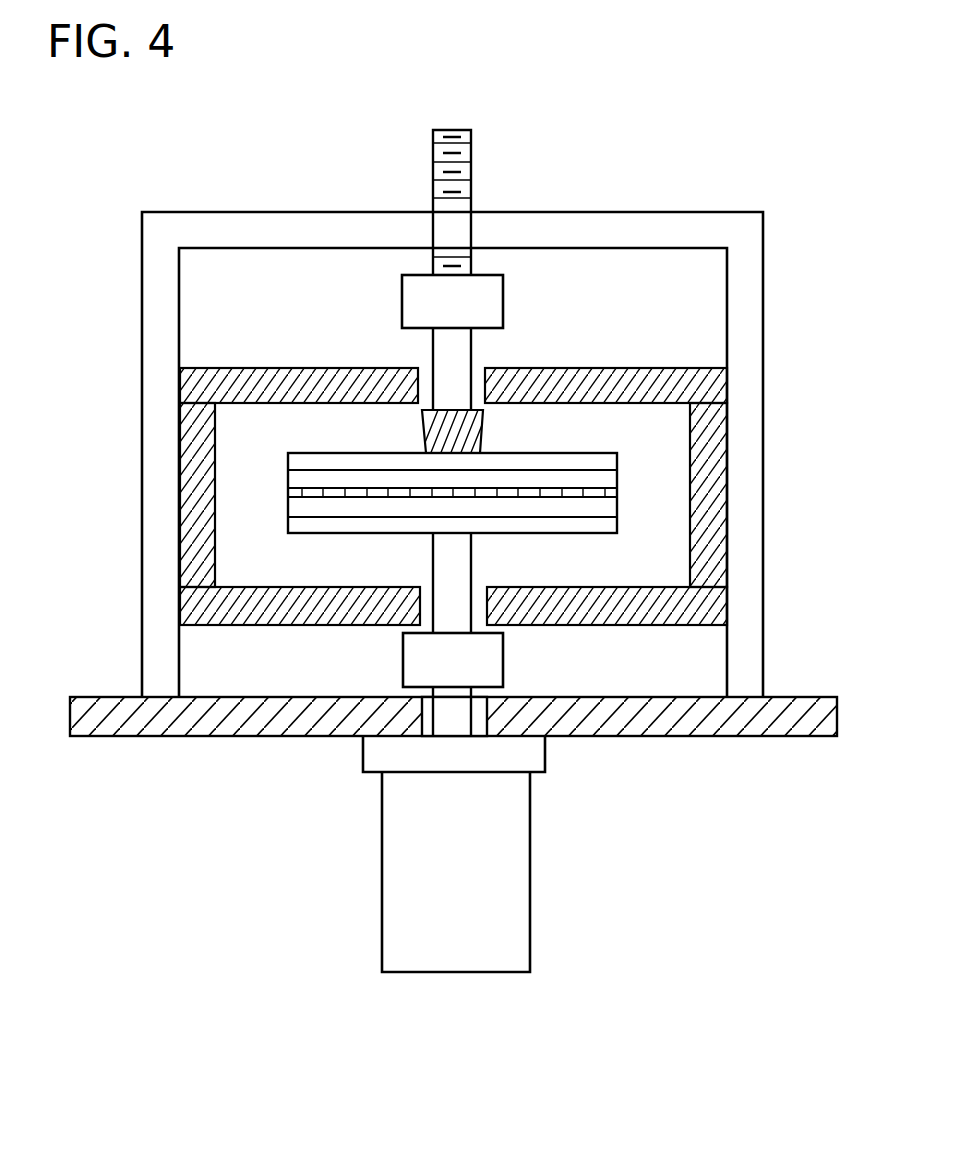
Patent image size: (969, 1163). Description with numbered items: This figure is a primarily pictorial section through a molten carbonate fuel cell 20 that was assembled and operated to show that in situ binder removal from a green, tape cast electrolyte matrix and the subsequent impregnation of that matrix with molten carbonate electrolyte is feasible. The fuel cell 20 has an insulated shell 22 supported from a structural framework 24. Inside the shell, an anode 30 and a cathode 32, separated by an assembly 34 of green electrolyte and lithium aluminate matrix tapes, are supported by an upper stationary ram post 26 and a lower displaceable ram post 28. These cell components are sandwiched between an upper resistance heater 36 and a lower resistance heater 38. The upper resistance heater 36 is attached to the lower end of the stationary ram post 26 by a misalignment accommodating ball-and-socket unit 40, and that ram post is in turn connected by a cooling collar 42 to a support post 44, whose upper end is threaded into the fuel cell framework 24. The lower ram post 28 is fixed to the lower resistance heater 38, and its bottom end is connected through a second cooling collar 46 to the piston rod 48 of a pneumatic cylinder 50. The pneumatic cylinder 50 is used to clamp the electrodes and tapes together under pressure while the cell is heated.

The fuel cell 20 is at (298, 158).
The insulated shell 22 is at (716, 442).
The structural framework 24 is at (764, 548).
The stationary ram post 26 is at (433, 356).
The displaceable ram post 28 is at (403, 631).
The anode 30 is at (288, 478).
The cathode 32 is at (288, 505).
The assembly of green electrolyte and lithium aluminate matrix tapes 34 is at (617, 490).
The upper resistance heater 36 is at (288, 463).
The lower resistance heater 38 is at (288, 528).
The ball-and-socket unit 40 is at (483, 433).
The cooling collar 42 is at (503, 300).
The support post 44 is at (472, 170).
The second cooling collar 46 is at (503, 665).
The piston rod 48 is at (420, 695).
The pneumatic cylinder 50 is at (530, 812).